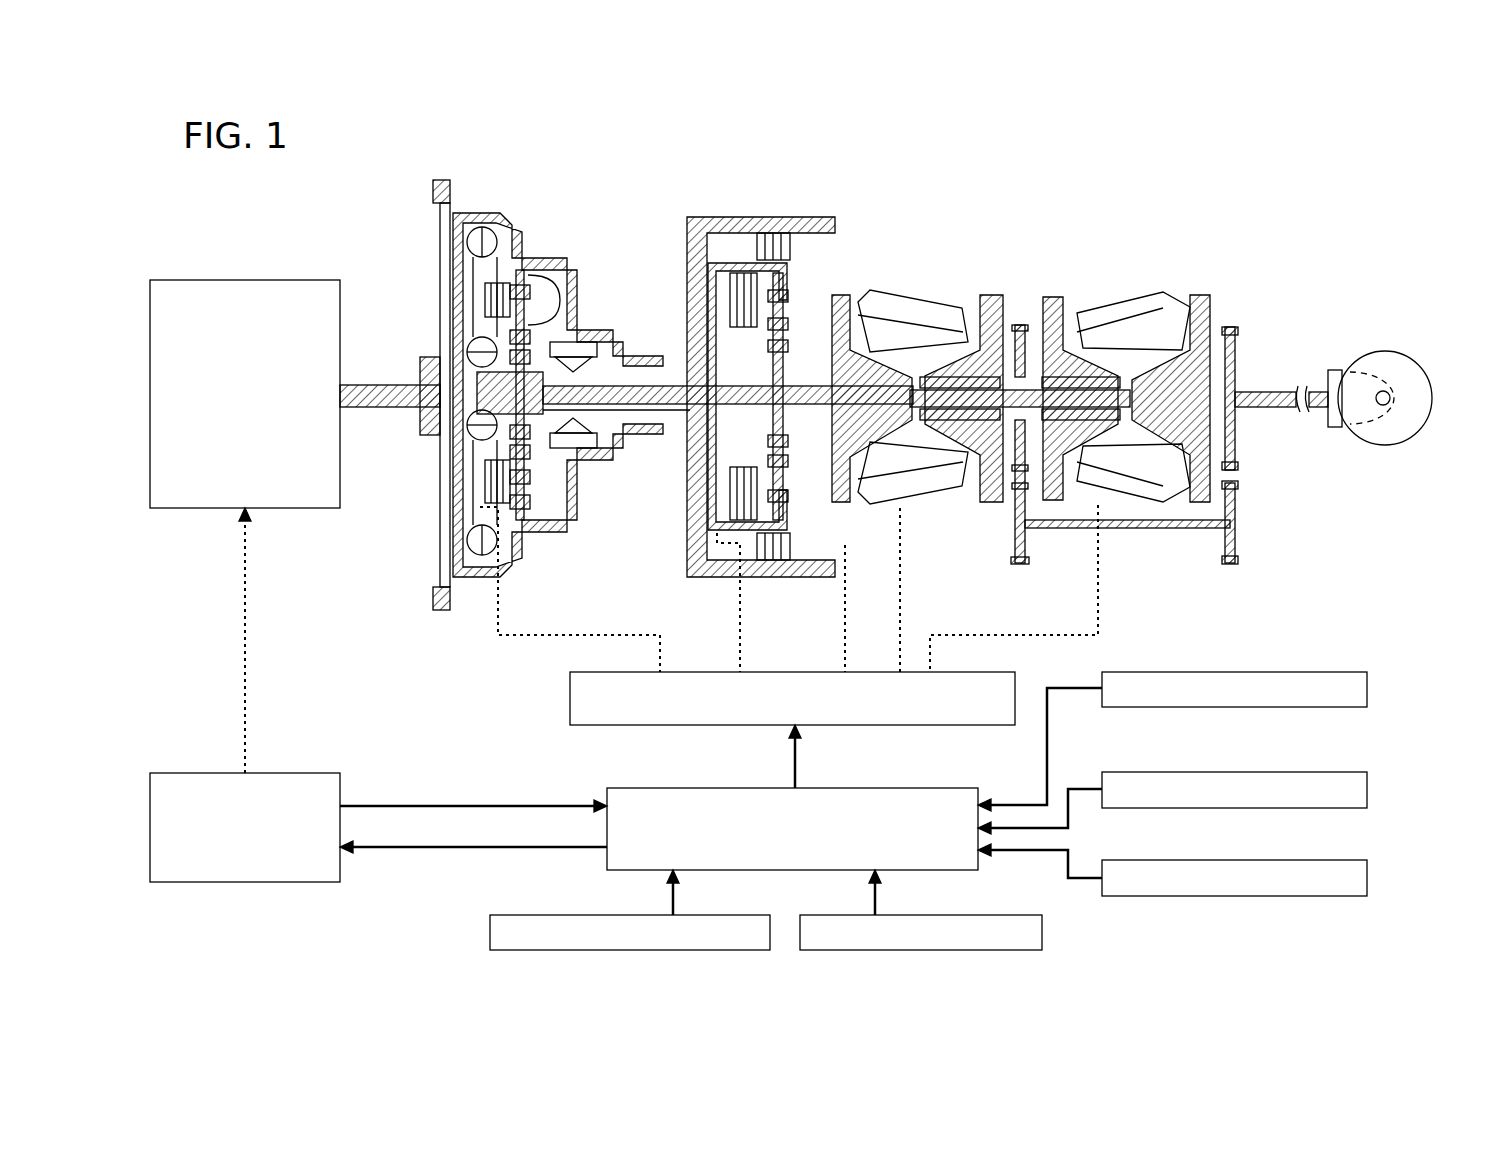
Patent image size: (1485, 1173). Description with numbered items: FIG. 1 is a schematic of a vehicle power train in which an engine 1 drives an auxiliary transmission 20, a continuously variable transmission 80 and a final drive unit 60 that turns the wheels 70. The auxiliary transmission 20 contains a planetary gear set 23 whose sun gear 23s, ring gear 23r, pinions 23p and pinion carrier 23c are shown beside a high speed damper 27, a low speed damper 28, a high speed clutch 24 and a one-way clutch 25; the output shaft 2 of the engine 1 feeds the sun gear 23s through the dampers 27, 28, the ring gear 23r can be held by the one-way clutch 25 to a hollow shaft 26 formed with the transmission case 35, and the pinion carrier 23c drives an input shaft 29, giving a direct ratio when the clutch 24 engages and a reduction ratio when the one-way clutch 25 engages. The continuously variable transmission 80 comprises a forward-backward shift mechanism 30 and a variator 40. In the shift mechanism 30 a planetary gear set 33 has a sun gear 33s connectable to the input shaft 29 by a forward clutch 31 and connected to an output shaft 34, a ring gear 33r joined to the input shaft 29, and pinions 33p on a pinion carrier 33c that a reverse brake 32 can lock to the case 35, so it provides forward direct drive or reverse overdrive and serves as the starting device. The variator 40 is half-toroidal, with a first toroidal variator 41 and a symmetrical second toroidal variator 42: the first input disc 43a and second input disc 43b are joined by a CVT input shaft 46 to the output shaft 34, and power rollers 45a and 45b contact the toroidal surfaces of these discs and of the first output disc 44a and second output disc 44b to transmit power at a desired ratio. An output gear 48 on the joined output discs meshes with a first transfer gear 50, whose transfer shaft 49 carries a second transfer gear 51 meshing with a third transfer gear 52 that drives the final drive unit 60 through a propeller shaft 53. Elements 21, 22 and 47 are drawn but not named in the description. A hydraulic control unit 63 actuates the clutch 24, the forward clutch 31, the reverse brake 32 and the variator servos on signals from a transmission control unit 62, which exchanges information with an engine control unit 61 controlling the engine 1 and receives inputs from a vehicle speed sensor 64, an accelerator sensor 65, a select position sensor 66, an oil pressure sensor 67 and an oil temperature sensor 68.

The engine 1 is at (205, 280).
The output shaft 2 is at (378, 408).
The auxiliary transmission 20 is at (504, 382).
The converter cover 21 is at (495, 215).
The drive plate 22 is at (441, 180).
The planetary gear set 23 is at (496, 356).
The ring gear 23r is at (500, 282).
The pinions 23p is at (520, 478).
The sun gear 23s is at (515, 376).
The pinion carrier 23c is at (540, 294).
The high speed clutch 24 is at (505, 262).
The one-way clutch 25 is at (577, 342).
The hollow shaft 26 is at (625, 356).
The high speed damper 27 is at (484, 227).
The low speed damper 28 is at (478, 358).
The input shaft 29 is at (655, 386).
The forward-backward shift mechanism 30 is at (785, 372).
The forward clutch 31 is at (715, 290).
The reverse brake 32 is at (790, 280).
The planetary gear set 33 is at (812, 418).
The pinions 33p is at (785, 332).
The sun gear 33s is at (790, 418).
The pinion carrier 33c is at (840, 550).
The ring gear 33r is at (790, 518).
The output shaft 34 is at (790, 386).
The transmission case 35 is at (752, 233).
The variator 40 is at (1065, 404).
The first toroidal variator 41 is at (920, 430).
The second toroidal variator 42 is at (1139, 415).
The first input disc 43a is at (842, 296).
The second input disc 43b is at (1200, 296).
The first output disc 44a is at (990, 300).
The second output disc 44b is at (1053, 296).
The power rollers 45a is at (898, 300).
The power rollers 45b is at (1148, 305).
The CVT input shaft 46 is at (1030, 388).
The primary piston rod 47 is at (1019, 325).
The output gear 48 is at (1011, 516).
The transfer shaft 49 is at (1140, 529).
The first transfer gear 50 is at (1022, 565).
The second transfer gear 51 is at (1237, 496).
The third transfer gear 52 is at (1237, 442).
The propeller shaft 53 is at (1280, 390).
The final drive unit 60 is at (1330, 368).
The engine control unit 61 is at (300, 772).
The transmission control unit 62 is at (625, 788).
The hydraulic control unit 63 is at (570, 672).
The vehicle speed sensor 64 is at (1320, 772).
The accelerator sensor 65 is at (1386, 392).
The select position sensor 66 is at (1310, 672).
The oil pressure sensor 67 is at (990, 915).
The oil temperature sensor 68 is at (580, 915).
The wheels 70 is at (1382, 446).
The continuously variable transmission 80 is at (730, 142).